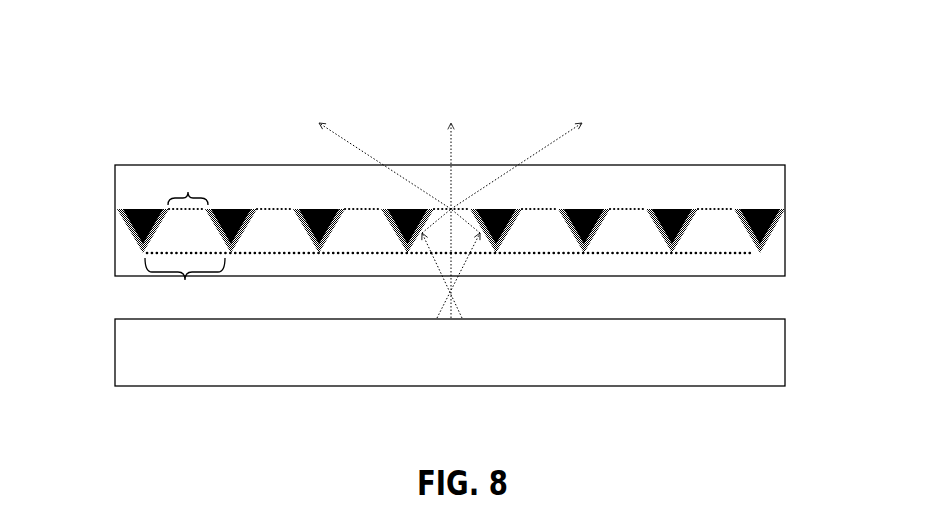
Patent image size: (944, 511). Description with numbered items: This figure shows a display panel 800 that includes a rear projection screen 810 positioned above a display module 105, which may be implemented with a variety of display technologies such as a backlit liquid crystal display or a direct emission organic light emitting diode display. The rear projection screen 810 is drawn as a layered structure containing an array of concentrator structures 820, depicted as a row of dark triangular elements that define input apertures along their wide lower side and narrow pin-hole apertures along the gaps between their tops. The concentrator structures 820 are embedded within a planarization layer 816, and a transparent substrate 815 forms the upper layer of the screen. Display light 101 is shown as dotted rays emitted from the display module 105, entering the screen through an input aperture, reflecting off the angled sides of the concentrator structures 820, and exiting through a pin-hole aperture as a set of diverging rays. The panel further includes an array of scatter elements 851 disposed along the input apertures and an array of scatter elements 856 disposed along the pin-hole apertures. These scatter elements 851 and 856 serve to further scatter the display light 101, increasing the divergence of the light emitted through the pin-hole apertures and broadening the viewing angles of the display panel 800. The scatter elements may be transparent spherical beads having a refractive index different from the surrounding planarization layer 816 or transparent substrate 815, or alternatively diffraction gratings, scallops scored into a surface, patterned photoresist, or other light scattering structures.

The display panel 800 is at (719, 93).
The rear projection screen 810 is at (793, 161).
The transparent substrate 815 is at (683, 190).
The planarization layer 816 is at (727, 240).
The array of concentrator structures 820 is at (106, 233).
The array of scatter elements 851 is at (185, 282).
The array of scatter elements 856 is at (188, 187).
The display light 101 is at (452, 158).
The display module 105 is at (532, 362).